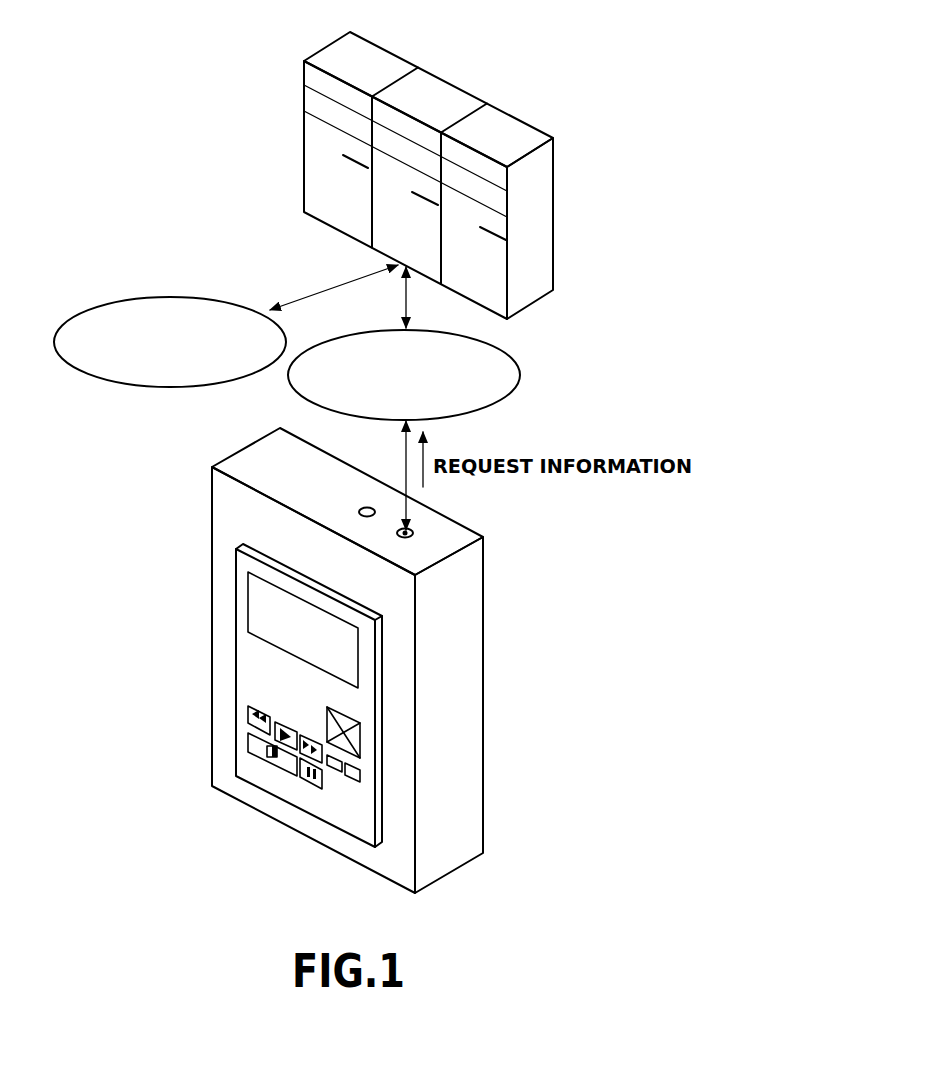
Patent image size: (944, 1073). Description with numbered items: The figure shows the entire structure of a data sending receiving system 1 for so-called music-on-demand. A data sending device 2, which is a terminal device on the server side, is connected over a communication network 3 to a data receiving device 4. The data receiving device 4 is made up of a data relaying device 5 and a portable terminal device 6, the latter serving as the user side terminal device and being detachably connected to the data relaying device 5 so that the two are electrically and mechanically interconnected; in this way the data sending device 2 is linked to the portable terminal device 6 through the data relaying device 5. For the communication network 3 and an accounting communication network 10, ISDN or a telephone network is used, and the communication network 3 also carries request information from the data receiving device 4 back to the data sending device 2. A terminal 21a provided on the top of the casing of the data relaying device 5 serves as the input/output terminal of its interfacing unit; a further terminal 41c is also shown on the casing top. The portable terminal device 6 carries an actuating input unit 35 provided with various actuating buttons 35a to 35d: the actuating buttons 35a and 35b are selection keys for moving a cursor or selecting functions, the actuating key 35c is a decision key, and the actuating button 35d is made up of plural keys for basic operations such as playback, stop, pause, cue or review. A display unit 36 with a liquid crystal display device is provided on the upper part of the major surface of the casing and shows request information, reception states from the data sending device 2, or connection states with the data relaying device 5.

The data sending receiving system 1 is at (359, 660).
The data sending device 2 is at (471, 88).
The communication network 3 is at (515, 355).
The data receiving device 4 is at (294, 660).
The data relaying device 5 is at (228, 513).
The portable terminal device 6 is at (247, 603).
The accounting communication network 10 is at (223, 300).
The terminal 21a is at (412, 530).
The display unit 36 is at (350, 645).
The connector terminal 41c is at (365, 507).
The actuating input unit 35 is at (341, 796).
The actuating button 35a is at (335, 768).
The actuating button 35b is at (350, 772).
The actuating key 35c is at (350, 732).
The actuating button 35d is at (245, 723).